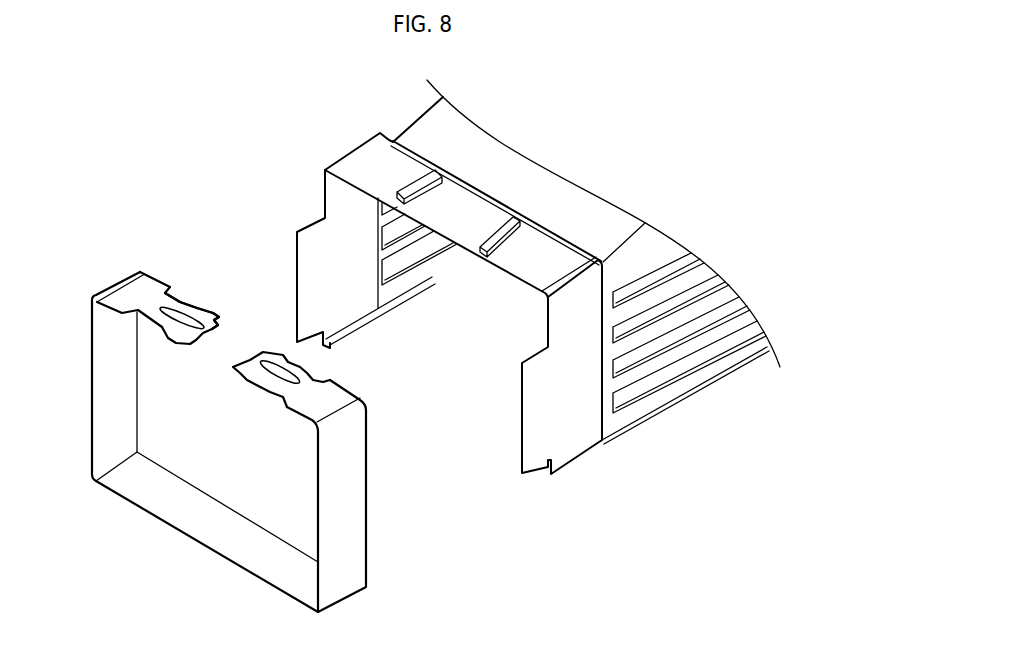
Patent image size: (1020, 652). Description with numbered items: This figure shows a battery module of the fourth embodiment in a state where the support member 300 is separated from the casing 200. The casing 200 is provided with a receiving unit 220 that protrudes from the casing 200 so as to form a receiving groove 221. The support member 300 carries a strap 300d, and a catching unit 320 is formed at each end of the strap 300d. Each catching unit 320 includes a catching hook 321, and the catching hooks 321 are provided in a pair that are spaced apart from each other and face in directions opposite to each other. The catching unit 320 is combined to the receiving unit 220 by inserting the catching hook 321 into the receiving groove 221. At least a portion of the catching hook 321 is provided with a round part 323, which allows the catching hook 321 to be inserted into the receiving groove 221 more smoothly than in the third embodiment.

The casing 200 is at (647, 405).
The receiving unit 220 is at (415, 187).
The receiving groove 221 is at (432, 192).
The support member 300 is at (104, 221).
The strap 300d is at (110, 289).
The catching unit 320 is at (173, 357).
The catching hook 321 is at (215, 318).
The round part 323 is at (190, 303).